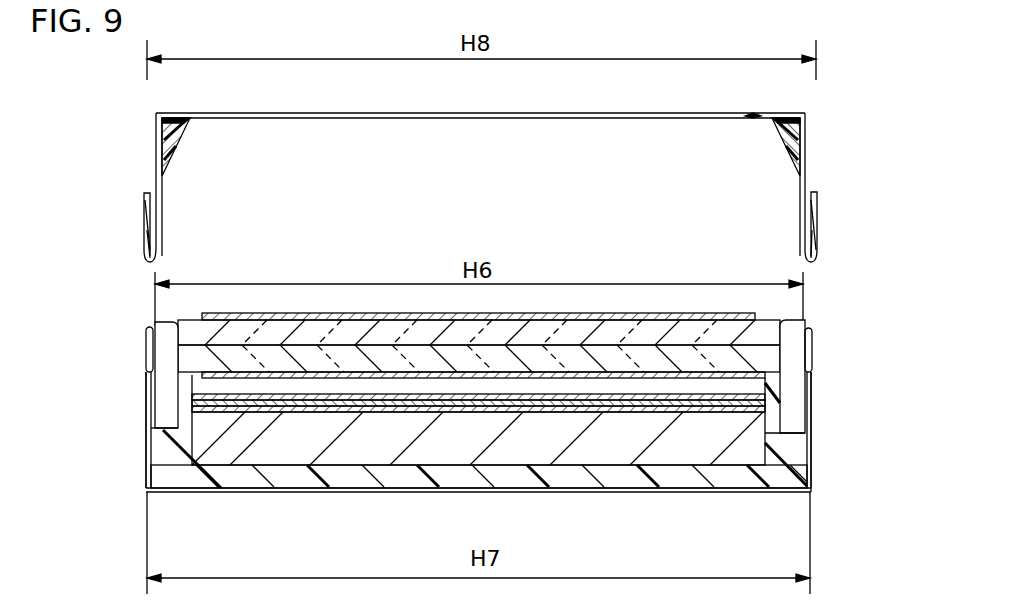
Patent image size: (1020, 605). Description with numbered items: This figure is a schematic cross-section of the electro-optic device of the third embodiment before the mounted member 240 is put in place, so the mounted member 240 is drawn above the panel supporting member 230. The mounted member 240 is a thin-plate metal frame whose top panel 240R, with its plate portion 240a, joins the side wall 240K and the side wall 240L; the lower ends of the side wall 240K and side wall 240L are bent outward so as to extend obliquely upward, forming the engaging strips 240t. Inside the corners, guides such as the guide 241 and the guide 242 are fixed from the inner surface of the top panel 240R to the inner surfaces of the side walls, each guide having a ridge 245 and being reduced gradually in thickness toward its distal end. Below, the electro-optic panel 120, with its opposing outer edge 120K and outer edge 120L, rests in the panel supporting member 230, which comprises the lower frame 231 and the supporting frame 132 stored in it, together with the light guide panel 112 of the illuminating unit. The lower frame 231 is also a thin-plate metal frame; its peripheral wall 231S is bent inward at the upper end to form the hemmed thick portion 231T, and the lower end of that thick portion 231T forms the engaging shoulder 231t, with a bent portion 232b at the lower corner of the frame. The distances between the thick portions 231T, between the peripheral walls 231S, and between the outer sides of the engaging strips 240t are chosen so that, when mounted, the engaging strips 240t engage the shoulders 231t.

The mounted member 240 is at (479, 141).
The front frame top plate 240a is at (332, 115).
The side wall 240L is at (155, 130).
The top panel 240R is at (759, 116).
The side wall 240K is at (804, 151).
The engaging strip 240t is at (147, 210).
The guide 241 is at (796, 118).
The guide 242 is at (189, 118).
The ridge 245 is at (178, 147).
The electro-optic panel 120 is at (480, 324).
The outer edge 120L is at (163, 316).
The outer edge 120K is at (795, 316).
The panel supporting member 230 is at (478, 441).
The lower frame 231 is at (478, 434).
The thick portion 231T is at (146, 328).
The engaging shoulder 231t is at (146, 373).
The peripheral wall 231S is at (146, 456).
The bottom chassis bent portion 232b is at (162, 464).
The supporting frame 132 is at (371, 491).
The light guide panel 112 is at (625, 461).